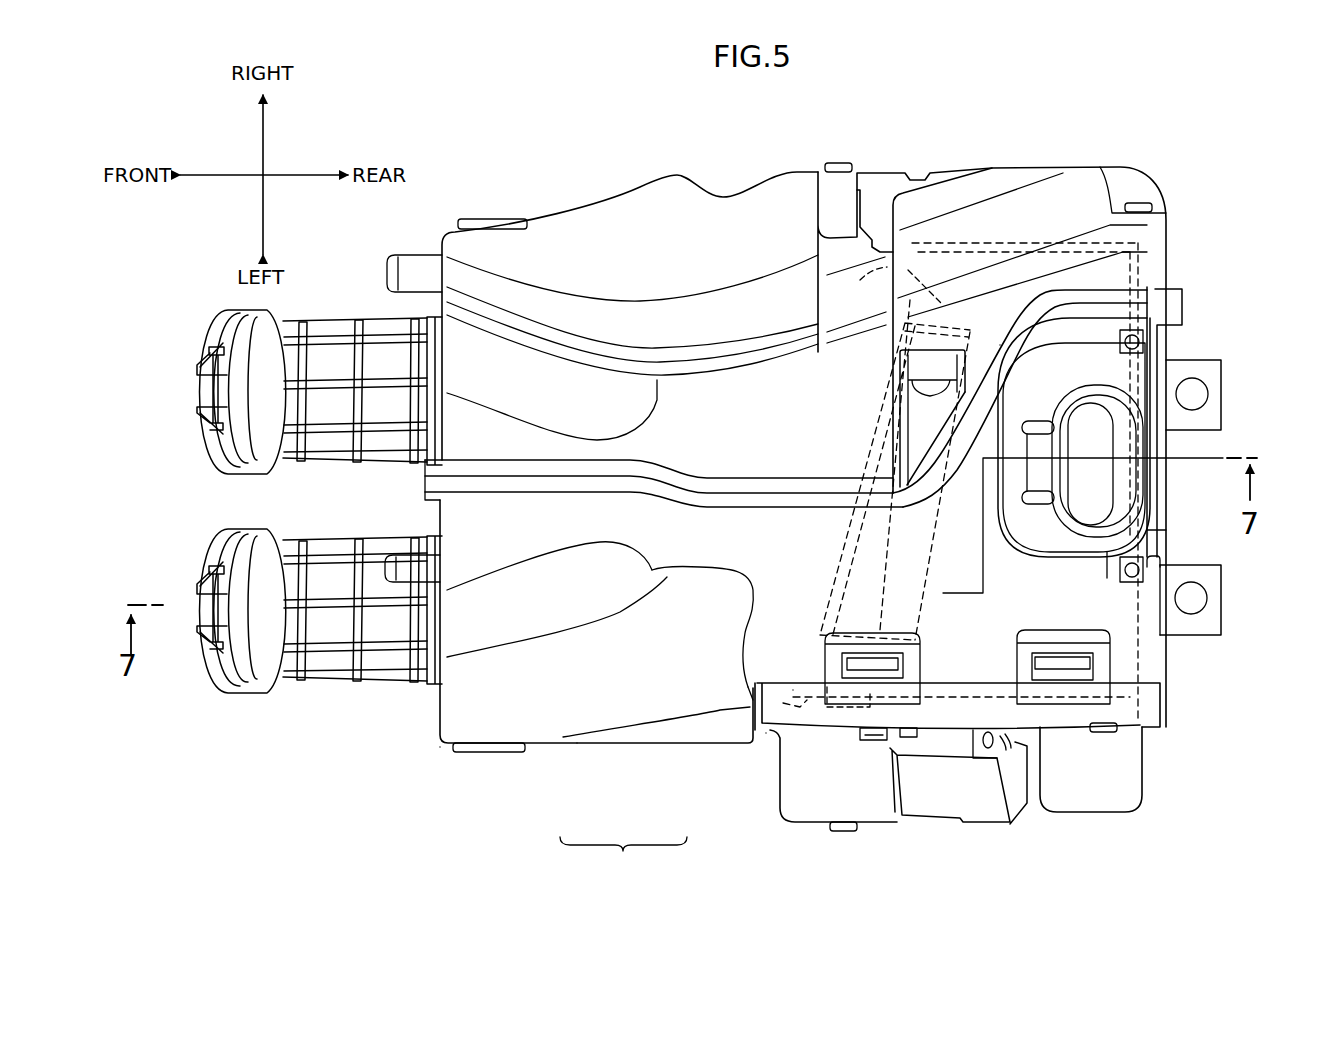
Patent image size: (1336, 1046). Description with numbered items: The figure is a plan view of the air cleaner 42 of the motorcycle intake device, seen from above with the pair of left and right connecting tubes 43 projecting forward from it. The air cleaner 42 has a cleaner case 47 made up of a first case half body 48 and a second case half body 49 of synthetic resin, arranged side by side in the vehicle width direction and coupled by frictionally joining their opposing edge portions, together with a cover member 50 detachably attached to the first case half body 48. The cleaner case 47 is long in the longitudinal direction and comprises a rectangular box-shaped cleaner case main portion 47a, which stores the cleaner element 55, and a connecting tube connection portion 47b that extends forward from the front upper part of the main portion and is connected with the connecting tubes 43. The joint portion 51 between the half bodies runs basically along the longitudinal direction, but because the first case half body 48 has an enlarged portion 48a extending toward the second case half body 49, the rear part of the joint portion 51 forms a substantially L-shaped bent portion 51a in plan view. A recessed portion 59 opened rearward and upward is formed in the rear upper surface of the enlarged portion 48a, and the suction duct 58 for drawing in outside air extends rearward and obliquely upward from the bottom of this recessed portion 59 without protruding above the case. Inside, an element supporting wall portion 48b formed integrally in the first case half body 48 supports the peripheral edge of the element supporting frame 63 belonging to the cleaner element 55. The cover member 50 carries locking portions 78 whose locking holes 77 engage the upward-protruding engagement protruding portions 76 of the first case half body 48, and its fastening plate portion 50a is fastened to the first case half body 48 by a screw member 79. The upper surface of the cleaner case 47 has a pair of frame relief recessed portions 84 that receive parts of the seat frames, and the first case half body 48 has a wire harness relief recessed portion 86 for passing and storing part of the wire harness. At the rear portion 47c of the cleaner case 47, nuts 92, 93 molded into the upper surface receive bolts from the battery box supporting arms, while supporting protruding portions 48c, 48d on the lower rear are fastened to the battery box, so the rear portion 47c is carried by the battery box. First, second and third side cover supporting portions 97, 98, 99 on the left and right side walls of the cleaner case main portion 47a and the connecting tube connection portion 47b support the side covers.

The air cleaner 42 is at (440, 749).
The connecting tube 43 is at (330, 357).
The cleaner case 47 is at (623, 857).
The cleaner case main portion 47a is at (793, 690).
The connecting tube connection portion 47b is at (577, 748).
The rear portion of the cleaner case 47c is at (1163, 533).
The first case half body 48 is at (1148, 595).
The enlarged portion 48a is at (1160, 352).
The element supporting wall portion 48b is at (905, 260).
The supporting protruding portion 48c is at (1215, 617).
The supporting protruding portion 48d is at (1208, 372).
The second case half body 49 is at (640, 222).
The cover member 50 is at (1128, 763).
The fastening plate portion 50a is at (745, 698).
The joint portion 51 is at (765, 492).
The bent portion 51a is at (1000, 345).
The cleaner element 55 is at (917, 520).
The suction duct 58 is at (1152, 437).
The recessed portion 59 is at (1126, 578).
The element supporting frame 63 is at (890, 365).
The engagement protruding portion 76 is at (858, 650).
The locking hole 77 is at (842, 655).
The locking portion 78 is at (885, 630).
The screw member 79 is at (766, 735).
The frame relief recessed portion 84 is at (553, 375).
The wire harness relief recessed portion 86 is at (552, 742).
The nut 92 is at (1133, 561).
The nut 93 is at (1135, 330).
The first side cover supporting portion 97 is at (1137, 203).
The second side cover supporting portion 98 is at (840, 163).
The third side cover supporting portion 99 is at (487, 218).